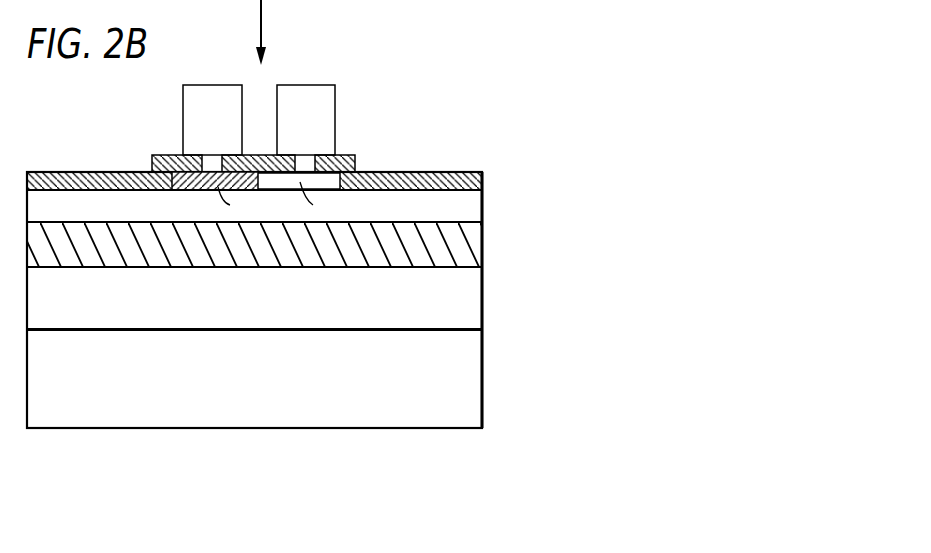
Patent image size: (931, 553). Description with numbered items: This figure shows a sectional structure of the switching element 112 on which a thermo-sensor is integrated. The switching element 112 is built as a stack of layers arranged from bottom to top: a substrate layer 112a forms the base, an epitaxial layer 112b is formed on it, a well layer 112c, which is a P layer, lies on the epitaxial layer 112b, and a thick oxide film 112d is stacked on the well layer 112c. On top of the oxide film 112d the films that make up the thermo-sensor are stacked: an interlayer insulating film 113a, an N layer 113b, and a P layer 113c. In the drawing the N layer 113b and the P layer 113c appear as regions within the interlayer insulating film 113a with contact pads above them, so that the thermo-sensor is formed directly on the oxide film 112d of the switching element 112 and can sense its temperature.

The switching element 112 is at (459, 454).
The substrate layer 112a is at (482, 377).
The epitaxial layer 112b is at (482, 298).
The well layer 112c is at (482, 243).
The oxide film 112d is at (482, 203).
The interlayer insulating film 113a is at (482, 182).
The N layer 113b is at (167, 155).
The P layer 113c is at (338, 170).